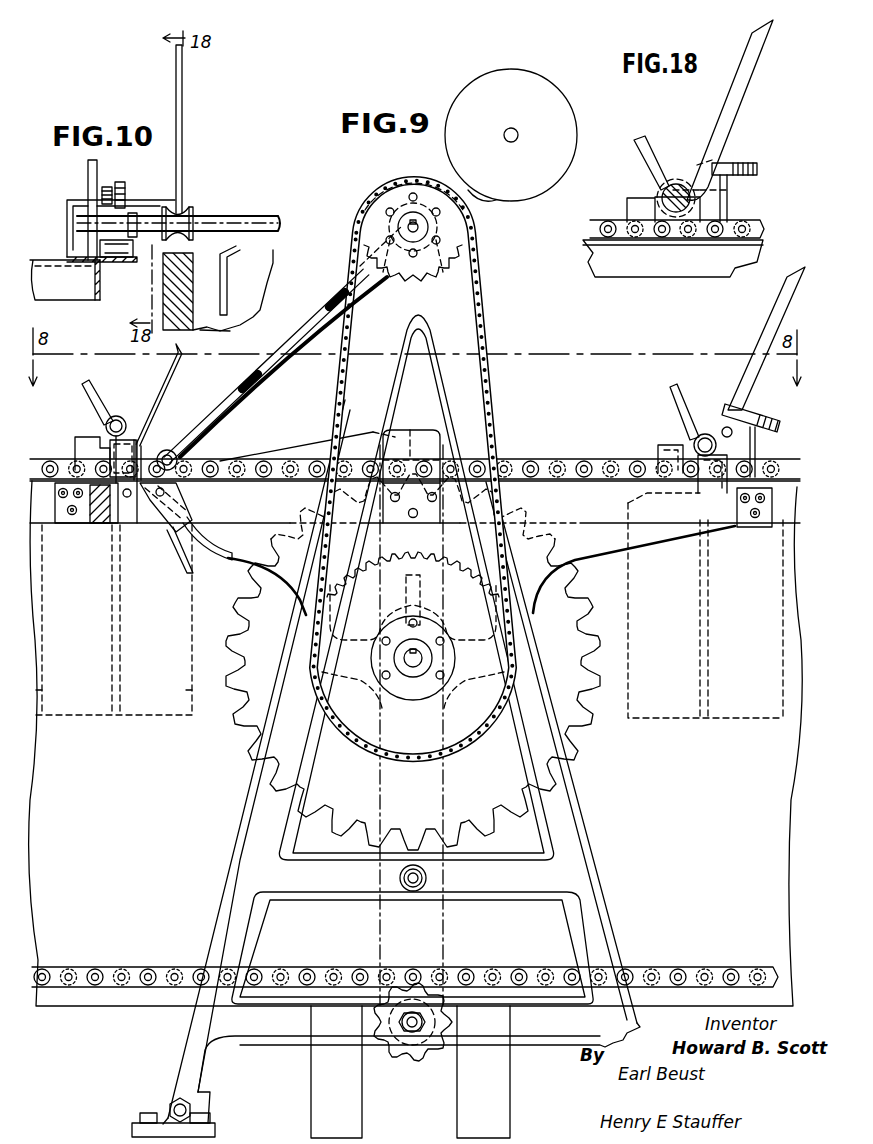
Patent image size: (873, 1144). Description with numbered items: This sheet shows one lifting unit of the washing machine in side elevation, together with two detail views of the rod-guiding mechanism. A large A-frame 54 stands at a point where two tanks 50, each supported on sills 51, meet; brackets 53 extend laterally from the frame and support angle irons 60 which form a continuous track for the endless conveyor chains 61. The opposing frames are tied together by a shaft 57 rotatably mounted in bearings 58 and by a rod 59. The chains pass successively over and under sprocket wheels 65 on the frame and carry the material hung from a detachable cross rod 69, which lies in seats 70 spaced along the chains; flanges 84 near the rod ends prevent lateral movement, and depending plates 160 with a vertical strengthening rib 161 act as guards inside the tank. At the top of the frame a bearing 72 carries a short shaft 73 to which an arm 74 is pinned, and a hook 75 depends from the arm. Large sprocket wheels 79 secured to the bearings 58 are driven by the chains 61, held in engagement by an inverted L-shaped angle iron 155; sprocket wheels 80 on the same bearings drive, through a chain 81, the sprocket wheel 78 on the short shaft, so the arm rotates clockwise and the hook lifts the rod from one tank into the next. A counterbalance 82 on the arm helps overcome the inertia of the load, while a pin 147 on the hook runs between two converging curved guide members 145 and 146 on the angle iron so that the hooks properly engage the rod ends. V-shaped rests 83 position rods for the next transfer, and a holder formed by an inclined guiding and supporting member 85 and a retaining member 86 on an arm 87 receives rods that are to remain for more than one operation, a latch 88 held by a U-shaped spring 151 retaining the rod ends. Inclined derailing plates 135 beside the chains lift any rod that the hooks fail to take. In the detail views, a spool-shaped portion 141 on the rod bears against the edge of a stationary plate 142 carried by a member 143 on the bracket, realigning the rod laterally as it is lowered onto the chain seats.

In FIG. 9, the tank 50 is at (42, 1010).
In FIG. 10, the tank 50 is at (163, 293).
In FIG. 9, the sill 51 is at (322, 1088).
In FIG. 9, the bracket 53 is at (642, 530).
In FIG. 10, the bracket 53 is at (60, 300).
In FIG. 9, the A-frame 54 is at (585, 825).
In FIG. 9, the shaft 57 is at (442, 658).
In FIG. 9, the bearing 58 is at (380, 658).
In FIG. 9, the rod 59 is at (430, 878).
In FIG. 9, the angle iron 60 is at (50, 518).
In FIG. 10, the angle iron 60 is at (101, 285).
In FIG. 18, the angle iron 60 is at (593, 247).
In FIG. 9, the chain 61 is at (547, 461).
In FIG. 18, the chain 61 is at (718, 240).
In FIG. 9, the sprocket wheel 65 is at (425, 1072).
In FIG. 9, the cross rod 69 is at (107, 425).
In FIG. 10, the cross rod 69 is at (246, 216).
In FIG. 18, the cross rod 69 is at (669, 195).
In FIG. 9, the seat 70 is at (100, 448).
In FIG. 10, the seat 70 is at (130, 241).
In FIG. 18, the seat 70 is at (657, 213).
In FIG. 9, the bearing 72 is at (408, 212).
In FIG. 9, the short shaft 73 is at (392, 248).
In FIG. 9, the arm 74 is at (270, 370).
In FIG. 9, the hook 75 is at (188, 495).
In FIG. 9, the sprocket wheel 78 is at (452, 228).
In FIG. 9, the large sprocket wheel 79 is at (560, 620).
In FIG. 9, the sprocket wheel 80 is at (401, 568).
In FIG. 9, the chain 81 is at (503, 392).
In FIG. 9, the counterbalance 82 is at (548, 149).
In FIG. 9, the rest 83 is at (158, 382).
In FIG. 9, the flange 84 is at (125, 418).
In FIG. 10, the flange 84 is at (133, 212).
In FIG. 9, the guiding and supporting member 85 is at (668, 400).
In FIG. 10, the guiding and supporting member 85 is at (90, 173).
In FIG. 9, the retaining member 86 is at (781, 301).
In FIG. 9, the arm 87 is at (732, 433).
In FIG. 9, the latch 88 is at (736, 448).
In FIG. 10, the latch 88 is at (126, 190).
In FIG. 18, the latch 88 is at (727, 192).
In FIG. 9, the derailing plate 135 is at (303, 457).
In FIG. 10, the spool-shaped portion 141 is at (186, 210).
In FIG. 18, the spool-shaped portion 141 is at (668, 185).
In FIG. 10, the stationary plate 142 is at (181, 140).
In FIG. 18, the stationary plate 142 is at (742, 88).
In FIG. 10, the member 143 is at (73, 206).
In FIG. 18, the member 143 is at (727, 205).
In FIG. 9, the curved guide member 145 is at (180, 568).
In FIG. 9, the curved guide member 146 is at (218, 560).
In FIG. 9, the pin 147 is at (186, 517).
In FIG. 9, the U-shaped spring 151 is at (766, 415).
In FIG. 10, the U-shaped spring 151 is at (108, 187).
In FIG. 18, the U-shaped spring 151 is at (751, 168).
In FIG. 9, the inverted L-shaped angle iron 155 is at (392, 432).
In FIG. 9, the depending plate 160 is at (100, 717).
In FIG. 10, the depending plate 160 is at (220, 303).
In FIG. 9, the strengthening rib 161 is at (110, 632).
In FIG. 10, the strengthening rib 161 is at (233, 283).